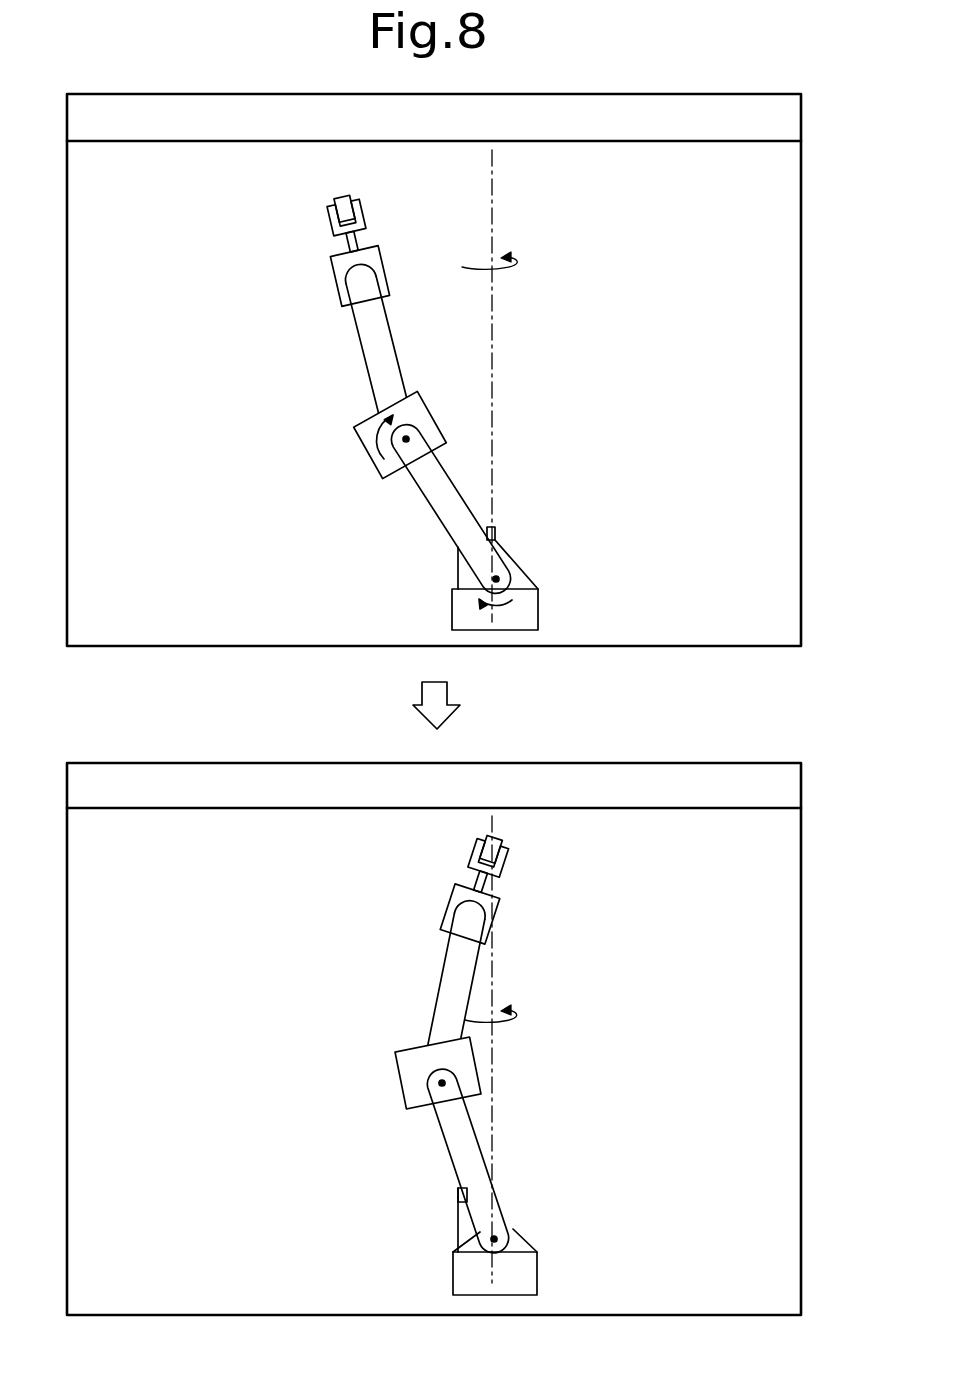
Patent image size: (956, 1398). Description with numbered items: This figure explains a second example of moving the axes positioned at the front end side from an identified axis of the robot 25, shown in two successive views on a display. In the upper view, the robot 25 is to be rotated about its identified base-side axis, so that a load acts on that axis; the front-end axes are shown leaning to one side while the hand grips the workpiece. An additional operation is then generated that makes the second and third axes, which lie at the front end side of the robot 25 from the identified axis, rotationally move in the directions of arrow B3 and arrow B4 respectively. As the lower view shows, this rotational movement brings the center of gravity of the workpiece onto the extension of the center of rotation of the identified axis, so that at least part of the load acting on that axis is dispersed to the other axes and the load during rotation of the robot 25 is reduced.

The handling robot 25 is at (382, 384).
The arrow B3 is at (513, 601).
The arrow B4 is at (375, 452).